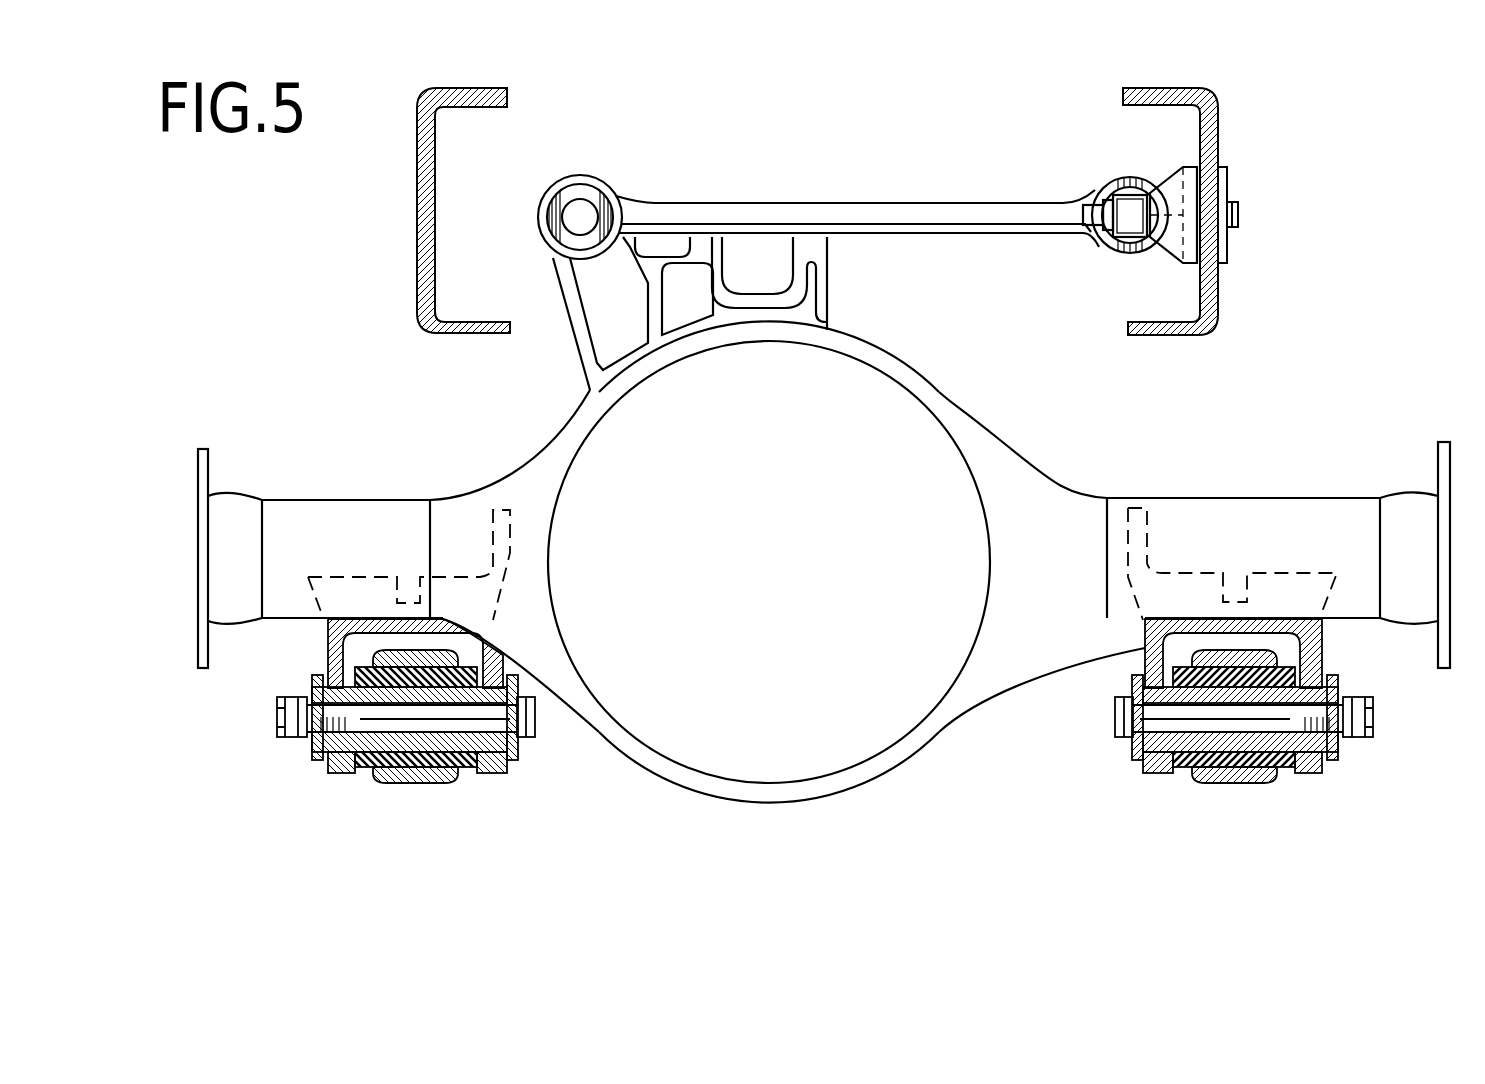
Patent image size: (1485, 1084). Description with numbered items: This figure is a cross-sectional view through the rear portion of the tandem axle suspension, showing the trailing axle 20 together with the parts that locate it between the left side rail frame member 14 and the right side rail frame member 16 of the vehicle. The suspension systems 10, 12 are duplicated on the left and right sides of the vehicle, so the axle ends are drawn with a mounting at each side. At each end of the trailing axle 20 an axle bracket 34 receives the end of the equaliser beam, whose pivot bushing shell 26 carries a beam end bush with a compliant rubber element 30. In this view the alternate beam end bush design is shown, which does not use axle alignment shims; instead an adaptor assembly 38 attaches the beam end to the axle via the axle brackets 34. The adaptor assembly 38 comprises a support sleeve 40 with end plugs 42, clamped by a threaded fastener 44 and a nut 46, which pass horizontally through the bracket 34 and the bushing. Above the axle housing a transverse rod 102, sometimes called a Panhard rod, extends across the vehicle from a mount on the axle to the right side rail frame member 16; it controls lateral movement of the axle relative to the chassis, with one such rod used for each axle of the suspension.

The suspension system 10 is at (553, 775).
The suspension system 12 is at (1049, 772).
The left side rail frame member 14 is at (417, 153).
The right side rail frame member 16 is at (1220, 152).
The trailing axle 20 is at (988, 412).
The pivot bushing shell 26 is at (427, 747).
The compliant rubber element 30 is at (460, 737).
The axle bracket 34 is at (335, 660).
The adaptor assembly 38 is at (505, 665).
The support sleeve 40 is at (397, 747).
The end plug 42 is at (320, 753).
The threaded fastener 44 is at (360, 717).
The nut 46 is at (282, 733).
The transverse rod 102 is at (897, 218).